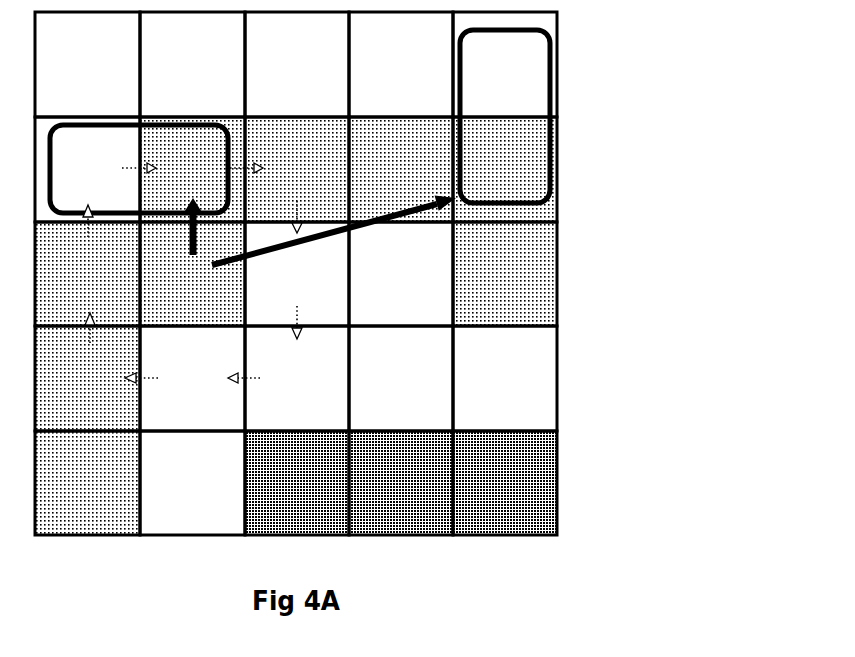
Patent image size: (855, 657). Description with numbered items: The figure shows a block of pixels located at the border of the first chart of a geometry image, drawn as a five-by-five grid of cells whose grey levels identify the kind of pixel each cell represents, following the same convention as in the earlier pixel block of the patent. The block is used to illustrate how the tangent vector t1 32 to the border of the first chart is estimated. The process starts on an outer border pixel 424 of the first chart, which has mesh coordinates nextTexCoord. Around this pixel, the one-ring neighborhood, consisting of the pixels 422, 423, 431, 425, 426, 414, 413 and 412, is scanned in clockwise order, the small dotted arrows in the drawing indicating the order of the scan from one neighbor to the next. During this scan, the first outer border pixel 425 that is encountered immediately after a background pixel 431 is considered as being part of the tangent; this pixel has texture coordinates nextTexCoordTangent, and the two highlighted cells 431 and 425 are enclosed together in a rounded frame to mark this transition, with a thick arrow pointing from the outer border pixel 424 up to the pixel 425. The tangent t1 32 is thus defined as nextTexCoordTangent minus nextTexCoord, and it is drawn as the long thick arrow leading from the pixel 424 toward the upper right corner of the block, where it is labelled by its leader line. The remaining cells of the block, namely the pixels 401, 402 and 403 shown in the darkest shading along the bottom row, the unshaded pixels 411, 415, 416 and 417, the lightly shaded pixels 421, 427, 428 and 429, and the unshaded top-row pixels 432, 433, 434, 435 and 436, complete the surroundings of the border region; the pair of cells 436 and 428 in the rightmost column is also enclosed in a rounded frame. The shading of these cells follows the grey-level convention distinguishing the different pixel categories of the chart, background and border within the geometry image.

The tangent vector t1 32 is at (450, 203).
The target cell 401 is at (505, 483).
The target cell 402 is at (401, 483).
The target cell 403 is at (297, 483).
The cell 411 is at (192, 483).
The pixel of the 1-ring neighborhood 412 is at (192, 378).
The pixel of the 1-ring neighborhood 413 is at (297, 378).
The pixel of the 1-ring neighborhood 414 is at (297, 274).
The cell 415 is at (401, 274).
The cell 416 is at (401, 378).
The cell 417 is at (505, 378).
The shaded cell 421 is at (87, 483).
The pixel of the 1-ring neighborhood 422 is at (87, 378).
The pixel of the 1-ring neighborhood 423 is at (87, 274).
The outer border pixel 424 is at (192, 274).
The first outer border pixel after a background pixel 425 is at (192, 169).
The pixel of the 1-ring neighborhood 426 is at (297, 169).
The shaded cell 427 is at (401, 169).
The shaded cell 428 is at (505, 169).
The shaded cell 429 is at (505, 274).
The background pixel 431 is at (87, 169).
The cell 432 is at (87, 64).
The cell 433 is at (192, 64).
The cell 434 is at (297, 64).
The cell 435 is at (401, 64).
The cell 436 is at (505, 64).